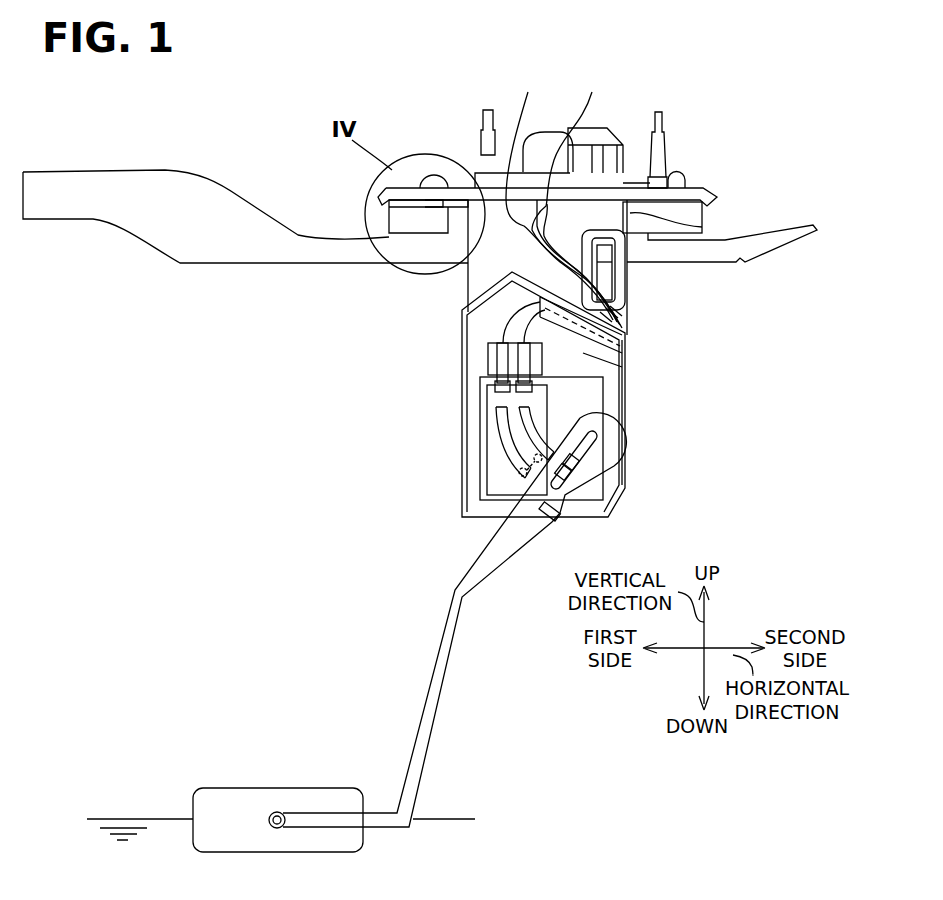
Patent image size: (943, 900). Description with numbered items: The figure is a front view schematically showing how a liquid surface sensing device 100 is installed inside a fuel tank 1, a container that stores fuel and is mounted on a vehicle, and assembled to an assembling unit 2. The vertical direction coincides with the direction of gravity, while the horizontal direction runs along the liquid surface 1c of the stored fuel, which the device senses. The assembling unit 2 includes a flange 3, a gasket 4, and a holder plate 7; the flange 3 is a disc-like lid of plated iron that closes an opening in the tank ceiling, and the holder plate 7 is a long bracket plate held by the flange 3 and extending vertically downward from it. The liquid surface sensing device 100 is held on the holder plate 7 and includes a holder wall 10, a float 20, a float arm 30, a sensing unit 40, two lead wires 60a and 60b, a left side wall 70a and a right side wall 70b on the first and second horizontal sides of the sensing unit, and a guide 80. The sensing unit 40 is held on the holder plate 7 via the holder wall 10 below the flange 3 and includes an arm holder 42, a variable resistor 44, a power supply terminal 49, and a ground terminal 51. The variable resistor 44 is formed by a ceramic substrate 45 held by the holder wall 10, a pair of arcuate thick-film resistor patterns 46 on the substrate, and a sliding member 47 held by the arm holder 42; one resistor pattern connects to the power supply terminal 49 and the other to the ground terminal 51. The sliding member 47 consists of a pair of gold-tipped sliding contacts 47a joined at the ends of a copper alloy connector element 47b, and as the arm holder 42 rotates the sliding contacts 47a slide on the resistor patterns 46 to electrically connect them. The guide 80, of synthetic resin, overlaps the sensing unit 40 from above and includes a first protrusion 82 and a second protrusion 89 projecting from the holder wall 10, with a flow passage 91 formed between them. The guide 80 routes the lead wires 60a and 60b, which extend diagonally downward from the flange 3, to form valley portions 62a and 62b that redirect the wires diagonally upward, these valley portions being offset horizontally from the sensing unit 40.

The fuel tank 1 is at (98, 170).
The liquid surface 1c is at (107, 818).
The assembling unit 2 is at (787, 103).
The flange 3 is at (690, 187).
The gasket 4 is at (704, 228).
The holder plate 7 is at (703, 232).
The holder wall 10 is at (490, 312).
The float 20 is at (270, 788).
The float arm 30 is at (444, 633).
The sensing unit 40 is at (336, 568).
The arm holder 42 is at (540, 528).
The variable resistor 44 is at (393, 362).
The substrate 45 is at (497, 398).
The resistor patterns 46 is at (512, 416).
The sliding member 47 is at (392, 452).
The sliding contacts 47a is at (534, 458).
The connector element 47b is at (540, 507).
The power supply terminal 49 is at (497, 358).
The ground terminal 51 is at (497, 368).
The lead wire 60a is at (577, 197).
The lead wire 60b is at (563, 195).
The valley portion 62a is at (607, 320).
The valley portion 62b is at (693, 299).
The left side wall 70a is at (462, 327).
The right side wall 70b is at (628, 438).
The guide 80 is at (728, 318).
The first protrusion 82 is at (612, 321).
The second protrusion 89 is at (603, 372).
The flow passage 91 is at (612, 350).
The liquid surface sensing device 100 is at (518, 556).